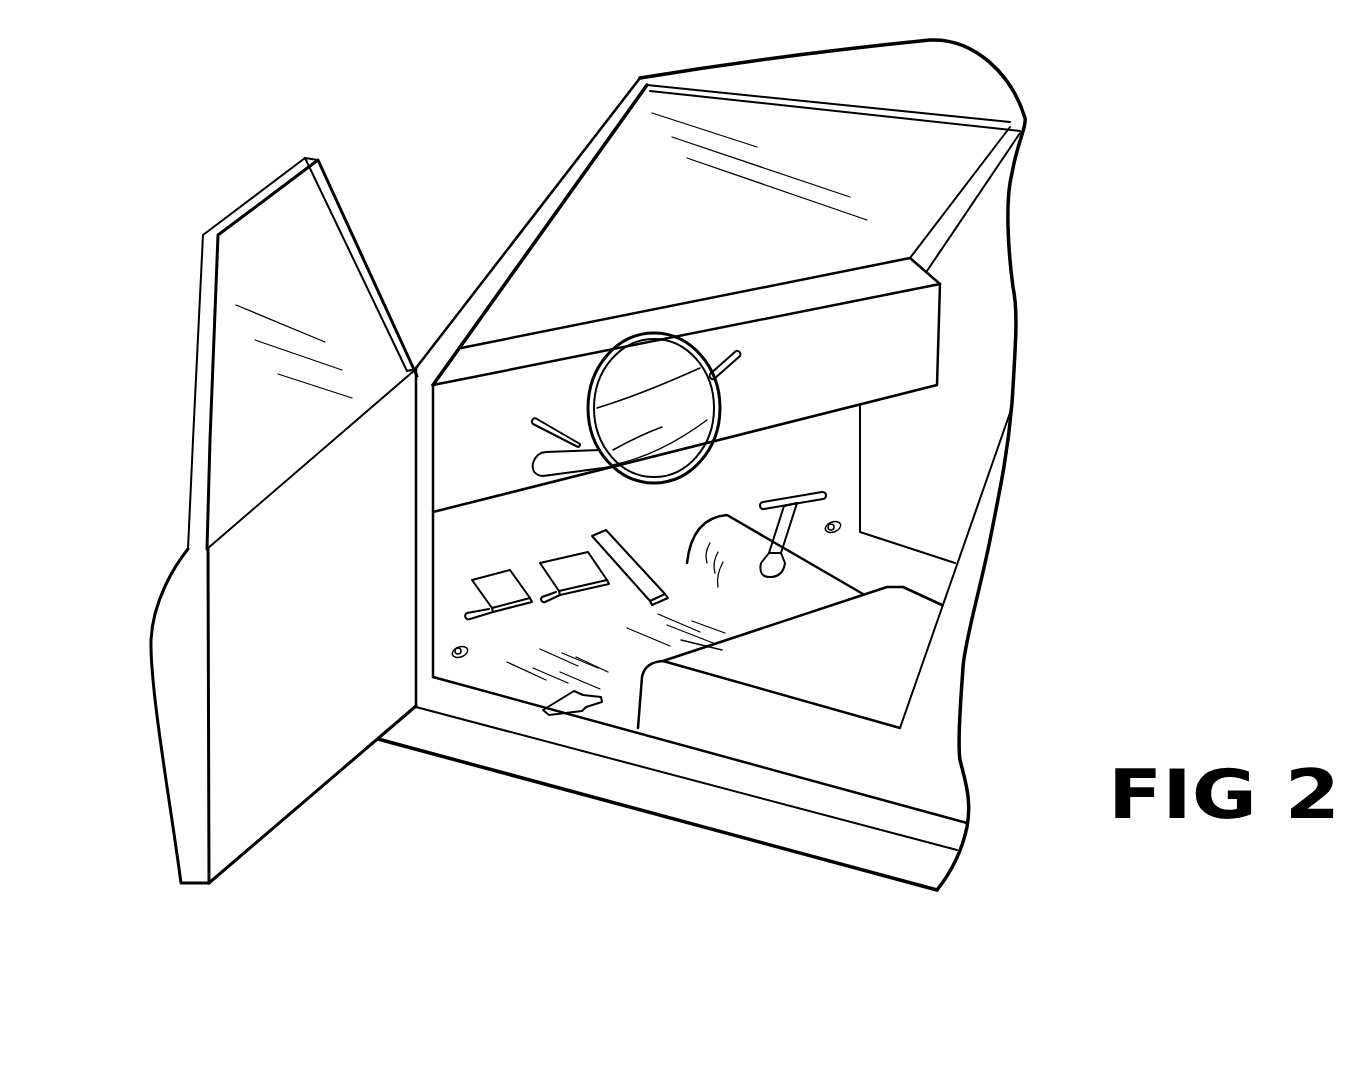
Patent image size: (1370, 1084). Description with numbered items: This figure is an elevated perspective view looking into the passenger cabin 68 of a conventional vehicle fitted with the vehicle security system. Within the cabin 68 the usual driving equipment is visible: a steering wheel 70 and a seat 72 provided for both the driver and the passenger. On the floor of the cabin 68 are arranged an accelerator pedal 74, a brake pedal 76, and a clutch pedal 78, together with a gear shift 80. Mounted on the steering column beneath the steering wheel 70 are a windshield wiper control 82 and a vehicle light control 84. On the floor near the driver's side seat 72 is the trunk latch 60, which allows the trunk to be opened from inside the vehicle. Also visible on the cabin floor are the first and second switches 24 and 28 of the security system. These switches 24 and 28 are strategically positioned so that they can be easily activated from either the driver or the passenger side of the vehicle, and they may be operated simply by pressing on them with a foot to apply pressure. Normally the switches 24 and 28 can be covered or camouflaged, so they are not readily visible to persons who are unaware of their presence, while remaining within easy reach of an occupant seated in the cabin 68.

The first switch 24 is at (458, 648).
The second switch 28 is at (840, 515).
The trunk latch 60 is at (590, 692).
The cabin 68 is at (978, 323).
The steering wheel 70 is at (642, 337).
The seat 72 is at (952, 685).
The accelerator pedal 74 is at (614, 530).
The brake pedal 76 is at (567, 563).
The clutch pedal 78 is at (505, 580).
The gear shift 80 is at (793, 497).
The windshield wiper control 82 is at (740, 352).
The vehicle light control 84 is at (563, 431).